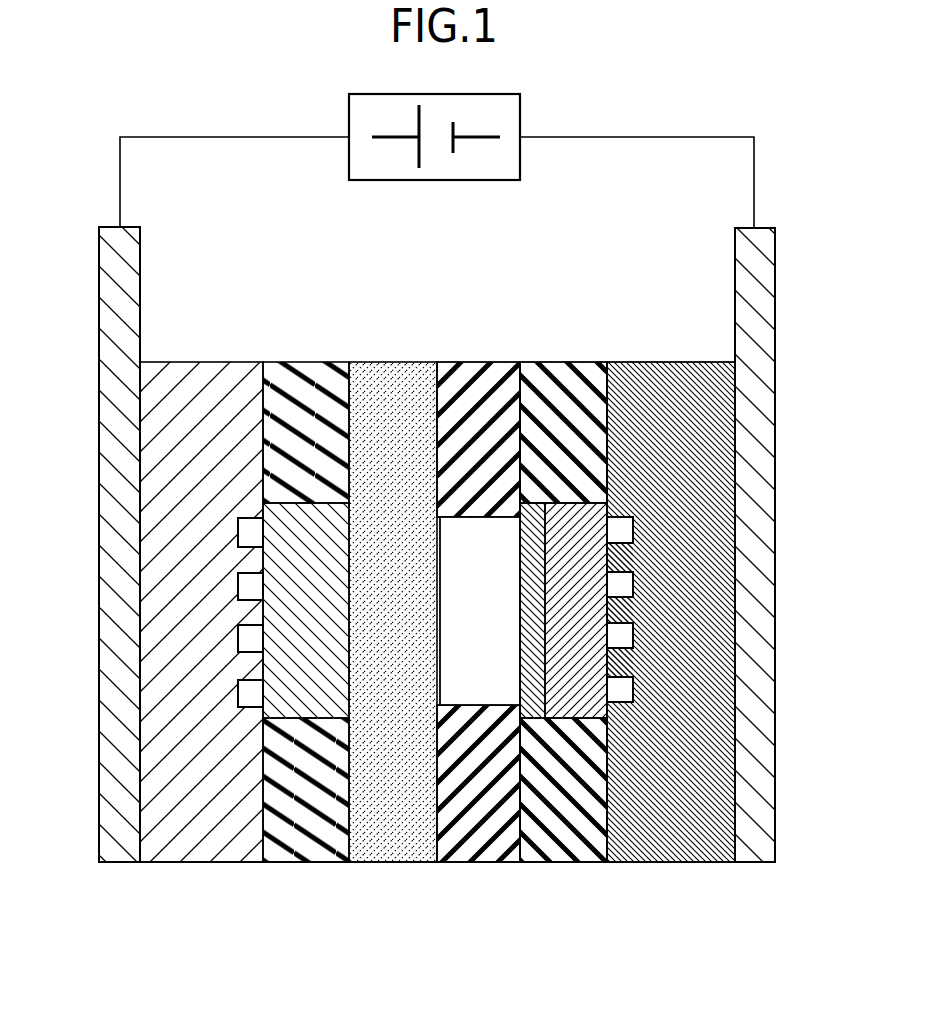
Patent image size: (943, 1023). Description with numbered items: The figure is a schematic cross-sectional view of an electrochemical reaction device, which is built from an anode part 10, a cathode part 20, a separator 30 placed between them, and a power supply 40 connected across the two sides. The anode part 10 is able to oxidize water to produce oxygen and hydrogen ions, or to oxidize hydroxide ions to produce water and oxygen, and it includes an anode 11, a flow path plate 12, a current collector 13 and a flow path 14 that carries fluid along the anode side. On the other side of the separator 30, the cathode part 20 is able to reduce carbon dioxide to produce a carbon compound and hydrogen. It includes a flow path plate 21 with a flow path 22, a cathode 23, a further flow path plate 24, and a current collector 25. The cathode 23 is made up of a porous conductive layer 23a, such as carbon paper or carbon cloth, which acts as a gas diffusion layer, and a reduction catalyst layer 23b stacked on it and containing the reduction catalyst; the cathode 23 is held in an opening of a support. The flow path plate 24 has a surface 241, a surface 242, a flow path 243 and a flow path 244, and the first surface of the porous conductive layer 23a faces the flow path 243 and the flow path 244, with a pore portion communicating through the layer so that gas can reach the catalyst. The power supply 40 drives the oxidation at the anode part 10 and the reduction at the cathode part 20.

The anode part 10 is at (196, 606).
The anode 11 is at (310, 722).
The flow path plate 12 is at (203, 372).
The current collector 13 is at (112, 275).
The flow path 14 is at (245, 530).
The cathode part 20 is at (631, 607).
The flow path plate 21 is at (480, 372).
The flow path 22 is at (483, 525).
The cathode 23 is at (559, 723).
The porous conductive layer 23a is at (583, 722).
The reduction catalyst layer 23b is at (537, 722).
The flow path plate 24 is at (672, 373).
The surface 241 is at (602, 385).
The surface 242 is at (737, 388).
The flow path 243 is at (633, 577).
The flow path 244 is at (622, 532).
The current collector 25 is at (763, 265).
The separator 30 is at (390, 835).
The power supply 40 is at (480, 183).